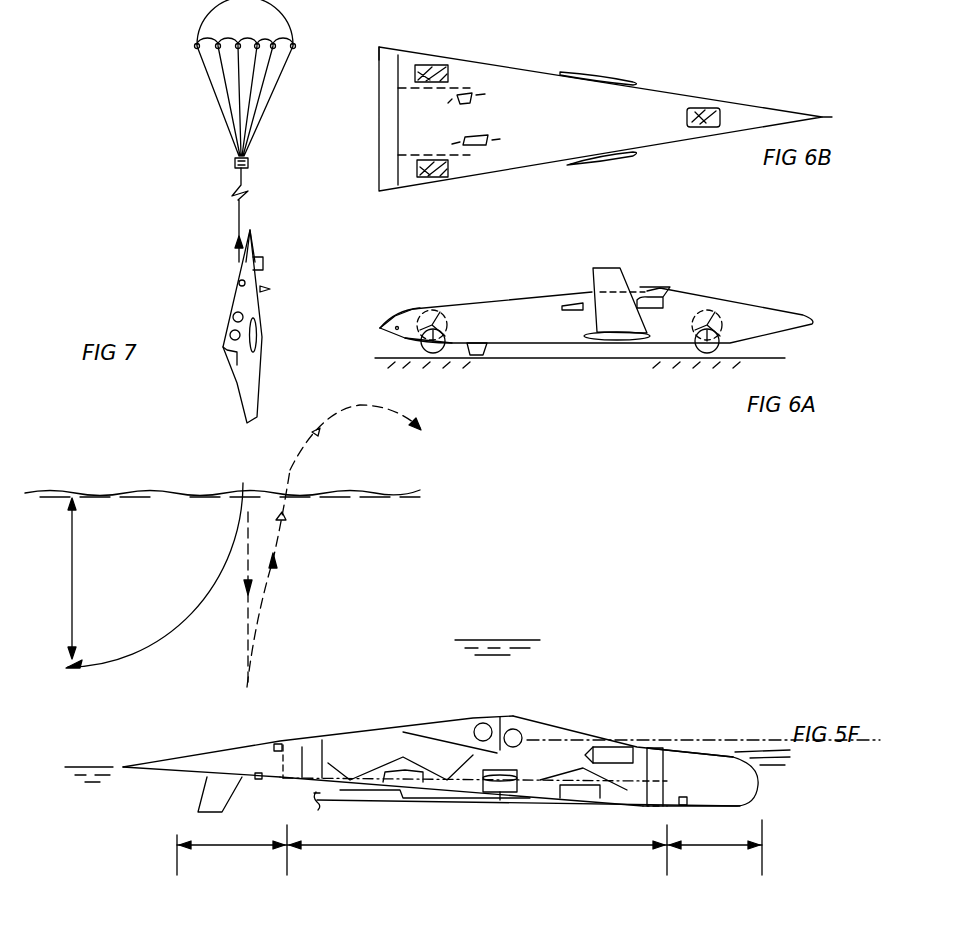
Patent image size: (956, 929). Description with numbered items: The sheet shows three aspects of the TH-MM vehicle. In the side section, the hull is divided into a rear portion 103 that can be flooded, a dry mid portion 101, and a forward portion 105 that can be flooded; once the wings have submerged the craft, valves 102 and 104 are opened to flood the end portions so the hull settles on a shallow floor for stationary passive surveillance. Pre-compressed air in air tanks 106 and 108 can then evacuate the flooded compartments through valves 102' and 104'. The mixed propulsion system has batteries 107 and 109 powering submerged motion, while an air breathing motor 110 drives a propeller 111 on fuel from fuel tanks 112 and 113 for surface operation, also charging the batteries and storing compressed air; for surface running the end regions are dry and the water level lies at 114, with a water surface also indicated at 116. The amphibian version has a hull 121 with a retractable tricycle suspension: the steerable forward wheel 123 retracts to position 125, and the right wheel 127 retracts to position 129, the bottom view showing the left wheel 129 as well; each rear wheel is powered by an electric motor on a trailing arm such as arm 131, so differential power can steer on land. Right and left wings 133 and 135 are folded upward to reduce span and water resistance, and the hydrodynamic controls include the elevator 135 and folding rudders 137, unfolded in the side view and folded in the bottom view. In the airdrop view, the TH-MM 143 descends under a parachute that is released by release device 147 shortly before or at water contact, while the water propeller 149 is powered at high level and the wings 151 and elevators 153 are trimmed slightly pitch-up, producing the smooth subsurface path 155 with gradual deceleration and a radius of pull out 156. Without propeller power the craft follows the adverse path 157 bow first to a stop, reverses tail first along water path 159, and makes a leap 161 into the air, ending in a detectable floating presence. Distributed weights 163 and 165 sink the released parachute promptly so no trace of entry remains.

In FIG. 5F, the mid portion 101 is at (510, 793).
In FIG. 5F, the valve 102 is at (265, 745).
In FIG. 5F, the valve 102' is at (268, 791).
In FIG. 5F, the rear portion 103 is at (228, 758).
In FIG. 5F, the valve 104 is at (675, 758).
In FIG. 5F, the valve 104' is at (703, 811).
In FIG. 5F, the forward portion 105 is at (705, 773).
In FIG. 5F, the air tank 106 is at (403, 788).
In FIG. 5F, the battery 107 is at (298, 750).
In FIG. 5F, the air tank 108 is at (583, 797).
In FIG. 5F, the battery 109 is at (653, 750).
In FIG. 5F, the air breathing motor 110 is at (507, 787).
In FIG. 5F, the propeller 111 is at (320, 810).
In FIG. 5F, the fuel tank 112 is at (323, 737).
In FIG. 5F, the fuel tank 113 is at (620, 753).
In FIG. 5F, the water level 114 is at (97, 757).
In FIG. 5F, the water surface 116 is at (520, 636).
In FIG. 6A, the hull 121 is at (545, 292).
In FIG. 6B, the forward wheel 123 is at (722, 115).
In FIG. 6A, the forward wheel 123 is at (700, 360).
In FIG. 6A, the retracted position 125 is at (720, 318).
In FIG. 6B, the right wheel 127 is at (447, 70).
In FIG. 6A, the right wheel 127 is at (445, 350).
In FIG. 6B, the left wheel 129 is at (450, 175).
In FIG. 6A, the left wheel 129 is at (442, 320).
In FIG. 6A, the trailing arm 131 is at (473, 310).
In FIG. 6B, the right wing 133 is at (637, 76).
In FIG. 6A, the right wing 133 is at (620, 265).
In FIG. 6B, the left wing 135 is at (388, 45).
In FIG. 6A, the left wing 135 is at (385, 318).
In FIG. 6B, the folding rudder 137 is at (493, 108).
In FIG. 6A, the folding rudder 137 is at (493, 347).
In FIG. 7, the TH-MM 143 is at (262, 382).
In FIG. 7, the release device 147 is at (240, 282).
In FIG. 7, the water propeller 149 is at (278, 288).
In FIG. 7, the wing 151 is at (262, 333).
In FIG. 7, the elevator 153 is at (262, 235).
In FIG. 7, the subsurface path 155 is at (173, 627).
In FIG. 7, the radius of pull out 156 is at (62, 578).
In FIG. 7, the adverse vehicle path 157 is at (246, 628).
In FIG. 7, the water path 159 is at (284, 520).
In FIG. 7, the leap 161 is at (320, 434).
In FIG. 7, the distributed weight 163 is at (233, 163).
In FIG. 7, the distributed weight 165 is at (192, 48).